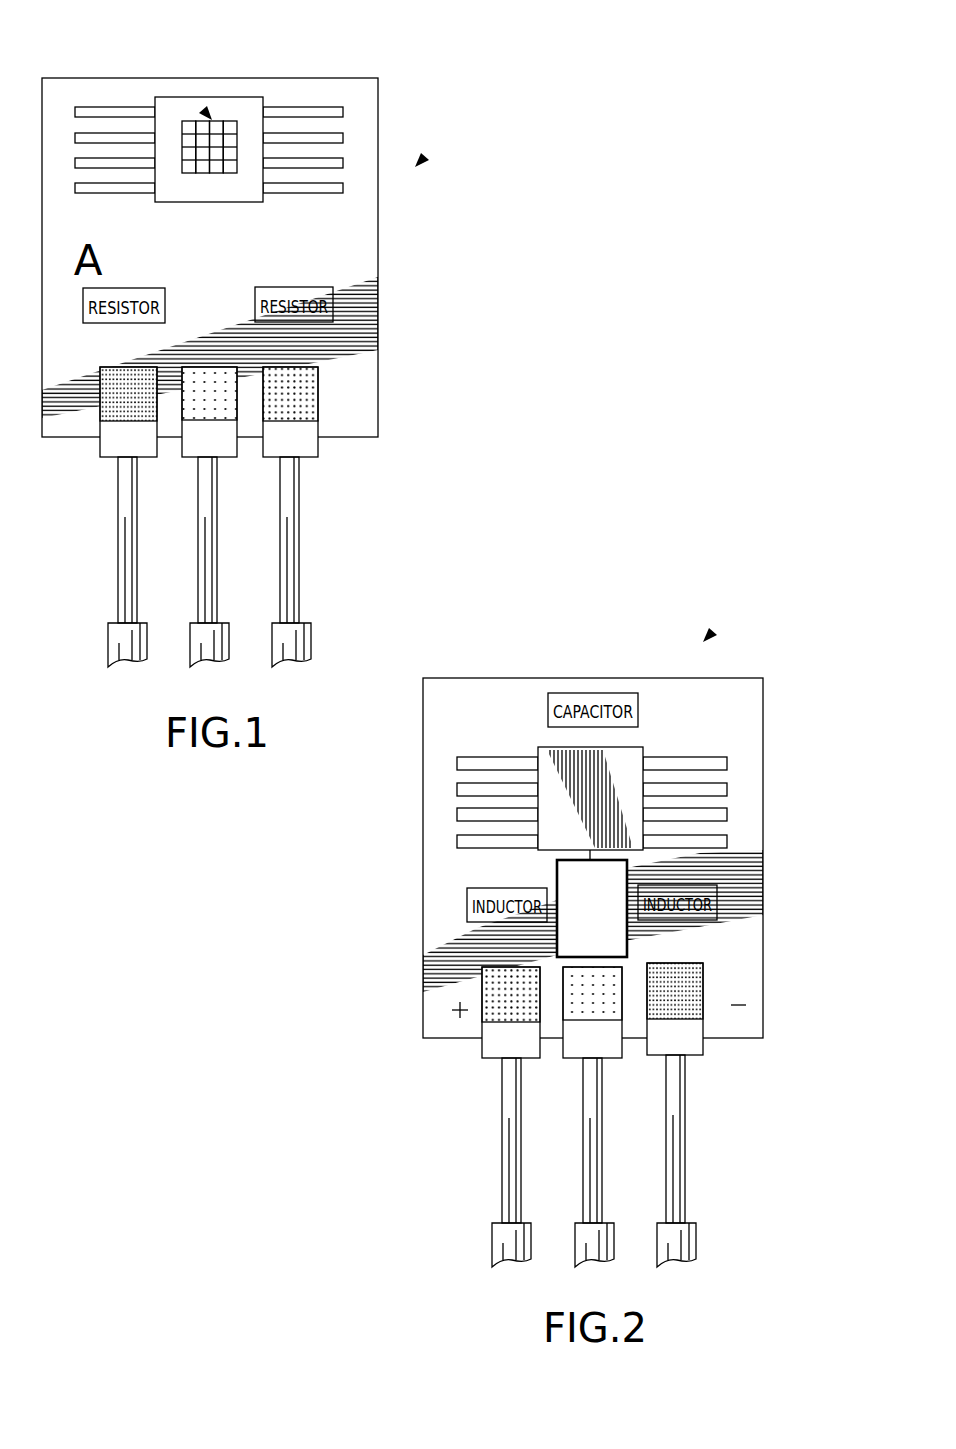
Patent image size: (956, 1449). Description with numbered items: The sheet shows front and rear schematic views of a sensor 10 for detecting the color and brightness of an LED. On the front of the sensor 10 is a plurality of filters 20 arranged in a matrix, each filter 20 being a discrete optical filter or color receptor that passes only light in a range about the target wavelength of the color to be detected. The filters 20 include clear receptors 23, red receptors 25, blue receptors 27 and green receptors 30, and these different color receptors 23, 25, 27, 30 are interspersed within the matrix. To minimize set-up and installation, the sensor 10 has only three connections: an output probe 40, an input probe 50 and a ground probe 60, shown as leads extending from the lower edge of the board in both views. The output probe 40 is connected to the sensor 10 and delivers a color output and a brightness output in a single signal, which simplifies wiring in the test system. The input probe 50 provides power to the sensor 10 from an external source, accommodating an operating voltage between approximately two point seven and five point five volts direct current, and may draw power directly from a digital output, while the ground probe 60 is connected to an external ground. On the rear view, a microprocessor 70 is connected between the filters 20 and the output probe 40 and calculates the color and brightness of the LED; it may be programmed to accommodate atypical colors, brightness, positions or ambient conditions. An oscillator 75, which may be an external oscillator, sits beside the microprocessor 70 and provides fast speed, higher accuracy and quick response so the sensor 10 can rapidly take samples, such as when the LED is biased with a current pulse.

In FIG. 1, the sensor 10 is at (419, 163).
In FIG. 2, the sensor 10 is at (708, 637).
In FIG. 1, the filter 20 is at (208, 116).
In FIG. 1, the clear receptor 23 is at (186, 170).
In FIG. 1, the red receptor 25 is at (205, 172).
In FIG. 1, the blue receptor 27 is at (216, 172).
In FIG. 1, the green receptor 30 is at (232, 168).
In FIG. 1, the output probe 40 is at (207, 520).
In FIG. 2, the output probe 40 is at (595, 1128).
In FIG. 1, the input probe 50 is at (296, 505).
In FIG. 2, the input probe 50 is at (508, 1097).
In FIG. 1, the ground probe 60 is at (121, 543).
In FIG. 2, the ground probe 60 is at (677, 1083).
In FIG. 2, the microprocessor 70 is at (632, 746).
In FIG. 2, the oscillator 75 is at (627, 864).